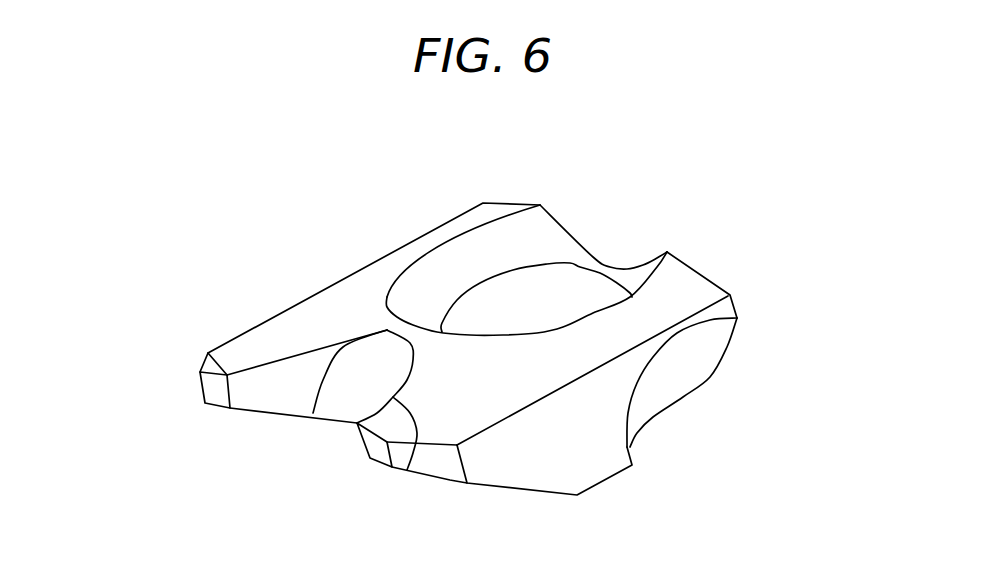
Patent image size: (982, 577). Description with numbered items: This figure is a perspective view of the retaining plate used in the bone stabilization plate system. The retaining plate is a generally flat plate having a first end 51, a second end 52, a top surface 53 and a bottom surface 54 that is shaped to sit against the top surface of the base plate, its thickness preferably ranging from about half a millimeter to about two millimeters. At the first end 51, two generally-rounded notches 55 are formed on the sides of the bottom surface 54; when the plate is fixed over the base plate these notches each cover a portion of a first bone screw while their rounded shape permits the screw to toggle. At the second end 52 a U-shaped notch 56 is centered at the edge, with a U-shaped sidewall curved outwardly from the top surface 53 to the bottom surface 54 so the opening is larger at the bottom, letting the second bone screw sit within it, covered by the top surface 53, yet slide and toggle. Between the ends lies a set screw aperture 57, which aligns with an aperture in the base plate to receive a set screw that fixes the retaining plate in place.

The first end 51 is at (707, 277).
The second end 52 is at (213, 387).
The top surface 53 is at (353, 292).
The bottom surface 54 is at (513, 495).
The generally-rounded notches 55 is at (690, 367).
The U-shaped notch 56 is at (407, 470).
The set screw aperture 57 is at (573, 285).